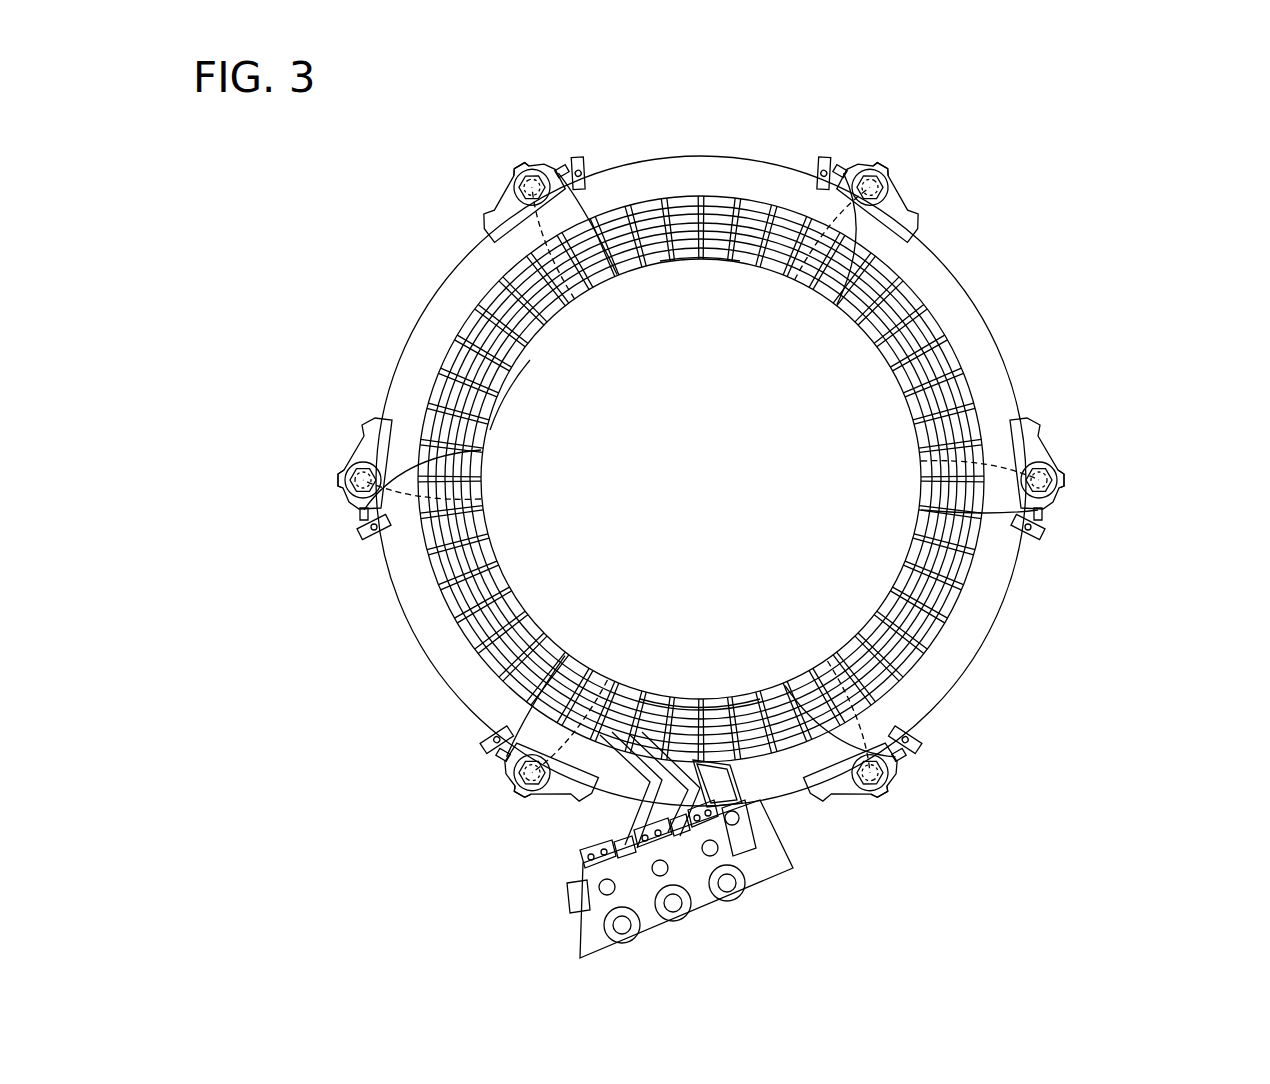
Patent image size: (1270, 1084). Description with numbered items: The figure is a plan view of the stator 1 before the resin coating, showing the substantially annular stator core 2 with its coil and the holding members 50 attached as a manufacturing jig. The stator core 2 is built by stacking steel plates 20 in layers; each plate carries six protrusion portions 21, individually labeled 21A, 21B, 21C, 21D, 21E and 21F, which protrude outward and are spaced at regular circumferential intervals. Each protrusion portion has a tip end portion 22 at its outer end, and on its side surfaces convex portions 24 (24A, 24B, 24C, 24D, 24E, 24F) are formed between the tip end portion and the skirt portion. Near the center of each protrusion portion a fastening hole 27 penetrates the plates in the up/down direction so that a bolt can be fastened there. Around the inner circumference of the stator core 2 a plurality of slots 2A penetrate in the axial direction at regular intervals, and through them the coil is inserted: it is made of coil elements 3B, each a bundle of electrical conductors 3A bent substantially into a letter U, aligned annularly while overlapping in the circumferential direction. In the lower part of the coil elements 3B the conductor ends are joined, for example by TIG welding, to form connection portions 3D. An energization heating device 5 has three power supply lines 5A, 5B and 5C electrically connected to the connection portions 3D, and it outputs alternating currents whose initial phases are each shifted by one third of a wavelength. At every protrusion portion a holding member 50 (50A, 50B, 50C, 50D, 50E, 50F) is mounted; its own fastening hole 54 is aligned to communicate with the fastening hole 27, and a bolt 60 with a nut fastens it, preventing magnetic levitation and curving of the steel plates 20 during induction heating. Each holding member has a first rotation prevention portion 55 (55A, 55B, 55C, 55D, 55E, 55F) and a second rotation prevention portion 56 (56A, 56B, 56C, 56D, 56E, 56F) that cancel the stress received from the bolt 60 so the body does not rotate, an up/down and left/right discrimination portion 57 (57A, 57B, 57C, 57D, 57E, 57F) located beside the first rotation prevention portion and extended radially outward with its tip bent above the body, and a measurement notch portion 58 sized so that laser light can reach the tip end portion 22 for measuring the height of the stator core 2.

The stator 1 is at (1200, 118).
The stator core 2 is at (1034, 346).
The steel plates 20 is at (978, 320).
The slots 2A is at (900, 365).
The electrical conductors 3A is at (668, 410).
The coil elements 3B is at (517, 384).
The connection portions 3D is at (724, 261).
The energization heating device 5 is at (684, 845).
The power supply line 5A is at (745, 800).
The power supply line 5B is at (675, 800).
The power supply line 5C is at (628, 812).
The holding member 50 is at (700, 494).
The holding member 50A is at (1136, 524).
The holding member 50B is at (868, 146).
The holding member 50C is at (541, 145).
The holding member 50D is at (265, 525).
The holding member 50E is at (451, 823).
The holding member 50F is at (945, 829).
The protrusion portions 21 is at (700, 494).
The protrusion portion 21A is at (1136, 524).
The protrusion portion 21B is at (868, 146).
The protrusion portion 21C is at (541, 145).
The protrusion portion 21D is at (265, 525).
The protrusion portion 21E is at (451, 823).
The protrusion portion 21F is at (945, 829).
The tip end portion 22 is at (892, 165).
The convex portions 24 is at (700, 494).
The convex portion 24A is at (1030, 542).
The convex portion 24B is at (833, 178).
The convex portion 24C is at (639, 134).
The convex portion 24D is at (348, 579).
The convex portion 24E is at (485, 740).
The convex portion 24F is at (917, 740).
The first rotation prevention portion 55 is at (700, 494).
The first rotation prevention portion 55A is at (1106, 561).
The first rotation prevention portion 55B is at (831, 122).
The first rotation prevention portion 55C is at (604, 121).
The first rotation prevention portion 55D is at (297, 562).
The first rotation prevention portion 55E is at (416, 769).
The first rotation prevention portion 55F is at (978, 774).
The second rotation prevention portion 56 is at (700, 494).
The second rotation prevention portion 56A is at (1035, 430).
The second rotation prevention portion 56B is at (915, 230).
The second rotation prevention portion 56C is at (487, 230).
The second rotation prevention portion 56D is at (367, 430).
The second rotation prevention portion 56E is at (567, 802).
The second rotation prevention portion 56F is at (835, 802).
The up/down and left/right discrimination portion 57 is at (700, 494).
The up/down and left/right discrimination portion 57A is at (1042, 535).
The up/down and left/right discrimination portion 57B is at (822, 166).
The up/down and left/right discrimination portion 57C is at (583, 166).
The up/down and left/right discrimination portion 57D is at (360, 535).
The up/down and left/right discrimination portion 57E is at (507, 764).
The up/down and left/right discrimination portion 57F is at (905, 752).
The measurement notch portion 58 is at (872, 168).
The bolt 60 is at (836, 307).
The fastening holes 27 is at (701, 480).
The fastening hole 54 is at (794, 281).